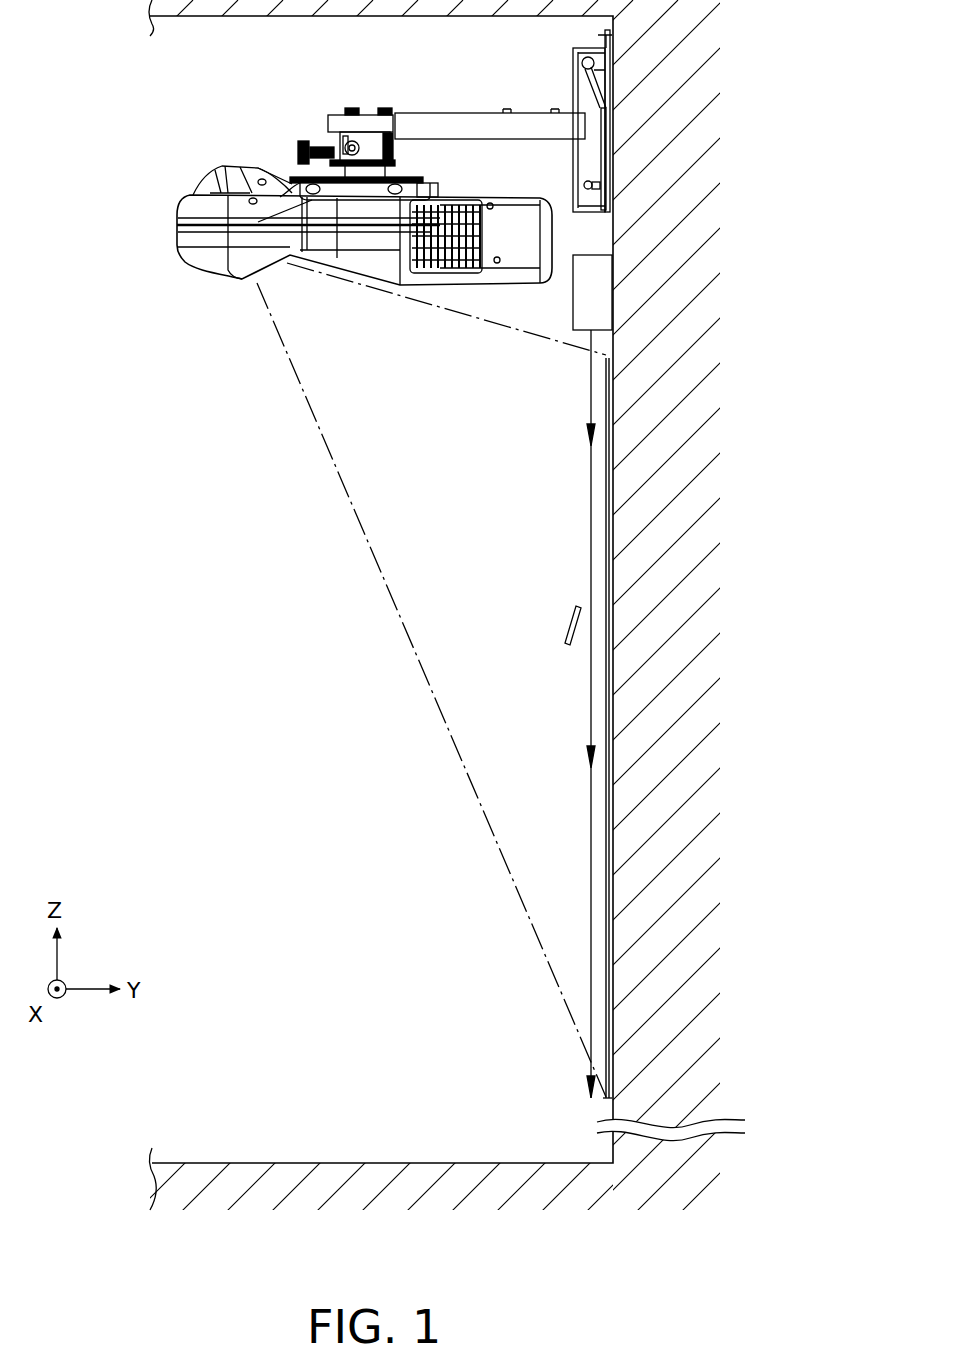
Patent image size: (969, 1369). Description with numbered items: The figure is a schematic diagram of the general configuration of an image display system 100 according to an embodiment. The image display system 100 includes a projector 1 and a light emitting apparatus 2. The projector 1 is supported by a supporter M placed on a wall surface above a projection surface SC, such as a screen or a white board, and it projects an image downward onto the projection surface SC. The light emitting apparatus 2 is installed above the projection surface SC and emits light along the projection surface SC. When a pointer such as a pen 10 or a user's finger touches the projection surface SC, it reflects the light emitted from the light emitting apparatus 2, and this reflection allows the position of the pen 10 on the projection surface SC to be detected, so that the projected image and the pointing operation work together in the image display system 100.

The image display system 100 is at (112, 148).
The projector 1 is at (190, 203).
The supporter M is at (452, 110).
The light emitting apparatus 2 is at (577, 309).
The pen 10 is at (570, 613).
The projection surface SC is at (606, 855).